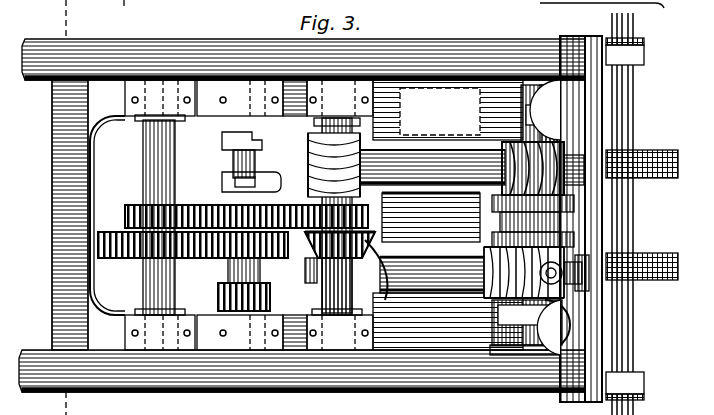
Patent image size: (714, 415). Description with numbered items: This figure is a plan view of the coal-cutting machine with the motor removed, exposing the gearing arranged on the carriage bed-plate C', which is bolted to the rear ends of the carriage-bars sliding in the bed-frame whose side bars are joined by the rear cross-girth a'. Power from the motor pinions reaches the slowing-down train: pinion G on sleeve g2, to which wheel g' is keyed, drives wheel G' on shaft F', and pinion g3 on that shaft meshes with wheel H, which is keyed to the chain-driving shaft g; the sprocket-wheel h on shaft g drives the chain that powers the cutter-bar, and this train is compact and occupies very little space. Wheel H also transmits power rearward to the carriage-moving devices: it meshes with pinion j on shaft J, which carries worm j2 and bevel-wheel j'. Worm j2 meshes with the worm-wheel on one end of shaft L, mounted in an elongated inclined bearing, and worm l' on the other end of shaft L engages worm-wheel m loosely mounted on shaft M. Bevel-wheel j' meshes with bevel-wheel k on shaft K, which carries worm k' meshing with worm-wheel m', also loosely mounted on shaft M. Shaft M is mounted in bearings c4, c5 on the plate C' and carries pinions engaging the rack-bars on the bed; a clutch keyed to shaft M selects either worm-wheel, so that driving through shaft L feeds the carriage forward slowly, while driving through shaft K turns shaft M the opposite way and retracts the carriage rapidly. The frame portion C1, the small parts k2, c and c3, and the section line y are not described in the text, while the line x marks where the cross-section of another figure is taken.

The wheel H is at (183, 177).
The carriage bed-plate C' is at (88, 215).
The frame portion C1 is at (448, 215).
The shaft F' is at (151, 215).
The pinion j is at (347, 215).
The worm j2 is at (314, 124).
The bevel-wheel j' is at (353, 241).
The pinion g3 is at (128, 205).
The wheel G' is at (193, 258).
The pinion G is at (261, 296).
The sleeve g2 is at (230, 272).
The wheel g' is at (302, 270).
The clutch part k2 is at (222, 136).
The chain-driving shaft g is at (230, 164).
The sprocket-wheel h is at (251, 182).
The shaft L is at (432, 167).
The shaft K is at (432, 275).
The bevel-wheel k is at (381, 280).
The worm l' is at (531, 182).
The bearing c4 is at (526, 105).
The bearing c5 is at (545, 90).
The worm-wheel m is at (584, 153).
The worm k' is at (568, 293).
The worm-wheel m' is at (617, 285).
The bracket c is at (527, 322).
The bracket arm c3 is at (562, 325).
The shaft M is at (525, 357).
The rear cross-girth a' is at (641, 214).
The section line y is at (68, 207).
The section line x is at (117, 17).